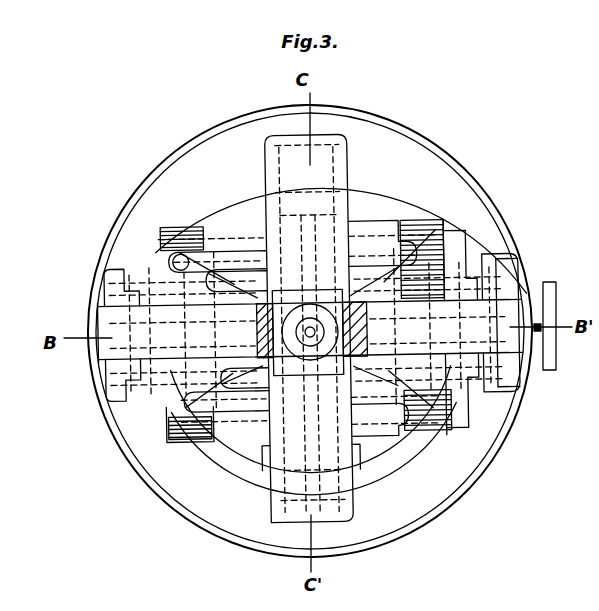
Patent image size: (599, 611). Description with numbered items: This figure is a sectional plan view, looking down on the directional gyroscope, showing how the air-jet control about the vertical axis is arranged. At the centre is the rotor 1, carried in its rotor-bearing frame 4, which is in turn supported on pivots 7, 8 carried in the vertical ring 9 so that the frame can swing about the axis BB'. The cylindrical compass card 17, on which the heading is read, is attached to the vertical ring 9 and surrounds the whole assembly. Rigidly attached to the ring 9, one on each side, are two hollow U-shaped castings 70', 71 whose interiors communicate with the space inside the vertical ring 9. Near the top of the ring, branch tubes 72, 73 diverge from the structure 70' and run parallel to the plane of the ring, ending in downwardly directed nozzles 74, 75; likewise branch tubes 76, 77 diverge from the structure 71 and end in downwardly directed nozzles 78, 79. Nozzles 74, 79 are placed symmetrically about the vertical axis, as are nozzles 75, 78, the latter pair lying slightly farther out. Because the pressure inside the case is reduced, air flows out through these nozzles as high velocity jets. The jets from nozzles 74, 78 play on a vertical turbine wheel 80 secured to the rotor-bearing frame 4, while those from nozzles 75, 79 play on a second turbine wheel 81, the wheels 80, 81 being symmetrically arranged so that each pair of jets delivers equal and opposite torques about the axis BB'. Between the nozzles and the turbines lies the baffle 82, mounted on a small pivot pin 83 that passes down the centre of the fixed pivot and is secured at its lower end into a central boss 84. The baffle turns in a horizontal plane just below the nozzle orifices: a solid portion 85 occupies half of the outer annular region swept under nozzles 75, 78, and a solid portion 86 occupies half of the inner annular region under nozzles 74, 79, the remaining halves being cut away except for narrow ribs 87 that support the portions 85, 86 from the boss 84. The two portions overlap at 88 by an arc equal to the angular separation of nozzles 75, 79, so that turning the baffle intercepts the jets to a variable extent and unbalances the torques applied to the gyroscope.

The rotor 1 is at (210, 362).
The rotor-bearing frame 4 is at (492, 262).
The pivot 7 is at (130, 330).
The pivot 8 is at (481, 317).
The vertical ring 9 is at (503, 313).
The compass card 17 is at (453, 248).
The U-shaped structure 70' is at (323, 516).
The U-shaped structure 71 is at (306, 301).
The branch tube 72 is at (248, 392).
The branch tube 73 is at (452, 434).
The nozzle 74 is at (167, 422).
The nozzle 75 is at (455, 393).
The branch tube 76 is at (228, 262).
The branch tube 77 is at (403, 228).
The nozzle 78 is at (177, 257).
The nozzle 79 is at (420, 219).
The vertical turbine wheel 80 is at (162, 243).
The vertical turbine wheel 81 is at (450, 404).
The baffle 82 is at (297, 300).
The pivot pin 83 is at (330, 340).
The boss 84 is at (319, 329).
The solid portion 85 is at (393, 457).
The solid portion 86 is at (250, 213).
The rib 87 is at (222, 287).
The overlap 88 is at (250, 366).